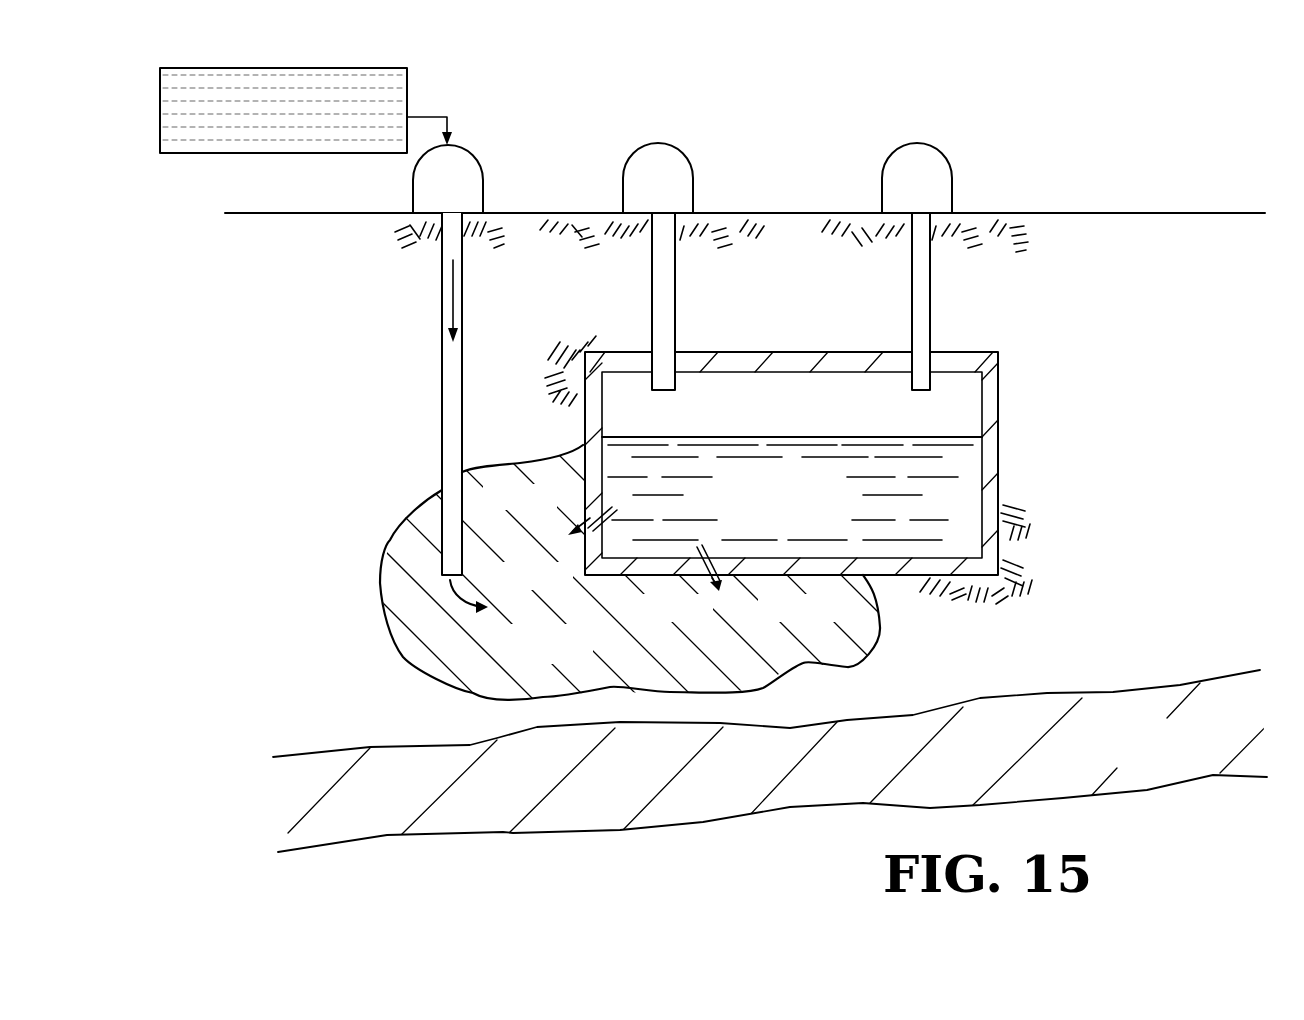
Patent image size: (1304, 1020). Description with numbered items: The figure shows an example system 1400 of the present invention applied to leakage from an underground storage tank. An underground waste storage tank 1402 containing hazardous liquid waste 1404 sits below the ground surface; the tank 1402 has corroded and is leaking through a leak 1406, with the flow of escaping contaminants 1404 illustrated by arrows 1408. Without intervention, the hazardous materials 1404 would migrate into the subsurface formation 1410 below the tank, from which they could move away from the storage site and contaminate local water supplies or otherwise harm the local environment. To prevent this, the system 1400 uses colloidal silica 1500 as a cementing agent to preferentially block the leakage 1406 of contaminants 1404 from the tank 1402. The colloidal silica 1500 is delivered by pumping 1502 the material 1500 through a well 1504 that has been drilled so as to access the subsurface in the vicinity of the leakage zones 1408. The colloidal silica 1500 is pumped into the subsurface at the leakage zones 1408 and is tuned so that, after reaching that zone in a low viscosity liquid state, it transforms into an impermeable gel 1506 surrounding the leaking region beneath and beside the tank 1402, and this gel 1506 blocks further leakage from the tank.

The system 1400 is at (1004, 126).
The underground waste storage tank 1402 is at (825, 410).
The hazardous liquid waste 1404 is at (820, 513).
The leak 1406 is at (588, 514).
The arrows 1408 is at (570, 536).
The subsurface formation 1410 is at (1157, 760).
The colloidal silica 1500 is at (409, 95).
The pumping 1502 is at (442, 305).
The well 1504 is at (442, 370).
The impermeable gel 1506 is at (590, 660).